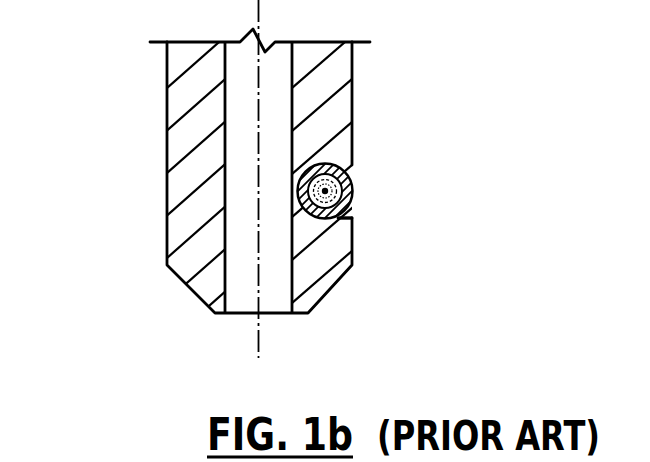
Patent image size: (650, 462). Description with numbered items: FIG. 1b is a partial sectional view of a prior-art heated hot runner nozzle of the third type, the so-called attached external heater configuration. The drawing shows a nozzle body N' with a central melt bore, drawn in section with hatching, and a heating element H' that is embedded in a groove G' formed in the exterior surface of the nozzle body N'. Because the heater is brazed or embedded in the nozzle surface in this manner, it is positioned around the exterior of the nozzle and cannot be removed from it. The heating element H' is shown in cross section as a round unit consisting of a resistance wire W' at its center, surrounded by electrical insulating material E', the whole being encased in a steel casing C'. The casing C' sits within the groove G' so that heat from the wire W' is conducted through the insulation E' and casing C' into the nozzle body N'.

The nozzle body N' is at (206, 193).
The groove G' is at (207, 179).
The heating element H' is at (378, 161).
The electrical insulating material E' is at (374, 184).
The resistance wire W' is at (380, 207).
The steel casing C' is at (378, 243).